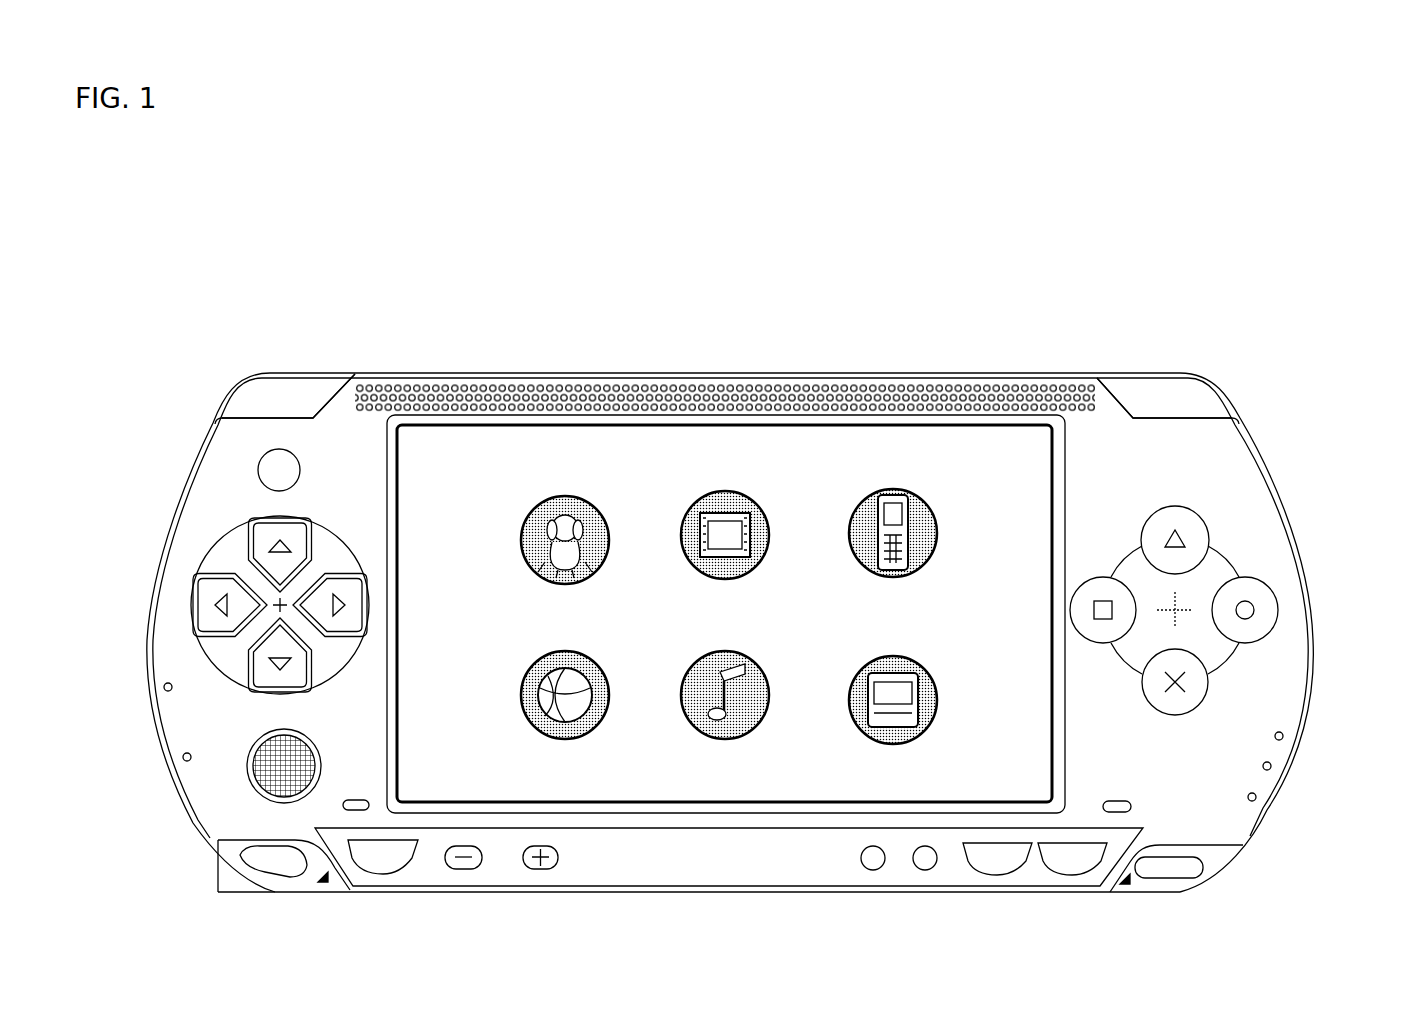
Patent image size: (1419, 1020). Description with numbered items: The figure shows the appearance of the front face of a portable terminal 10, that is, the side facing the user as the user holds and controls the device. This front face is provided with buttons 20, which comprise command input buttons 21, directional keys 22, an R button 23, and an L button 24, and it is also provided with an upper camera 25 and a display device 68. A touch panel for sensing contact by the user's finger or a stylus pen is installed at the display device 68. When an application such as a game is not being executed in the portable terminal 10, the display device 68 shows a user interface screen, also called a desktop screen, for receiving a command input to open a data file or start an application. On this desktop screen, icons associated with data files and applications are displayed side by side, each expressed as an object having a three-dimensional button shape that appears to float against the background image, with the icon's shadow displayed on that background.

The portable terminal 10 is at (1167, 214).
The buttons 20 is at (1366, 376).
The command input buttons 21 is at (1276, 506).
The directional keys 22 is at (192, 503).
The R button 23 is at (1215, 392).
The L button 24 is at (247, 390).
The upper camera 25 is at (258, 470).
The display device 68 is at (1027, 443).